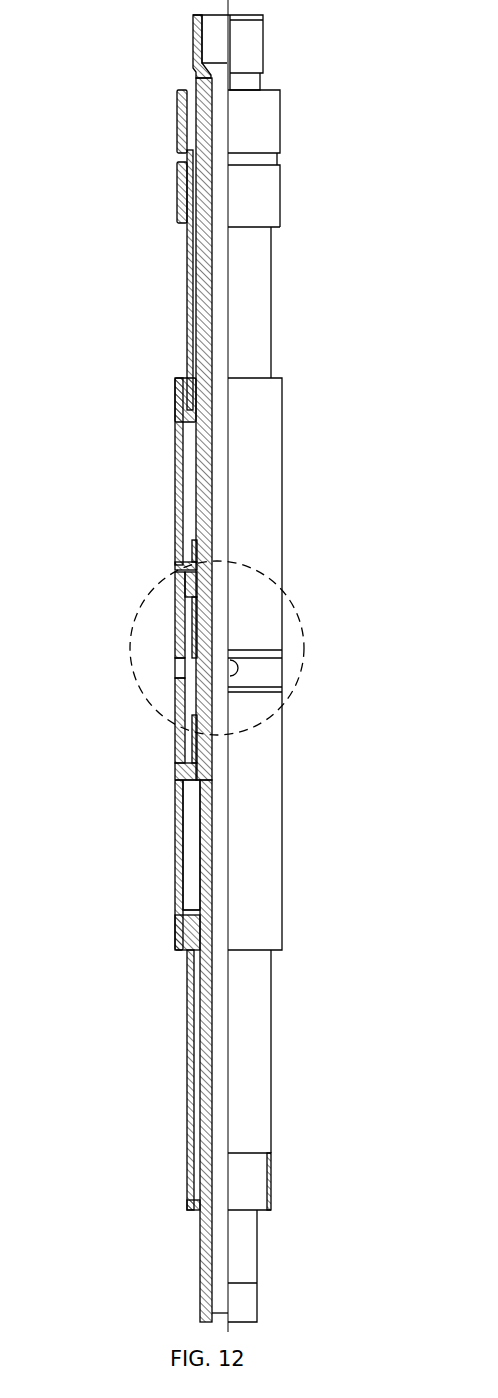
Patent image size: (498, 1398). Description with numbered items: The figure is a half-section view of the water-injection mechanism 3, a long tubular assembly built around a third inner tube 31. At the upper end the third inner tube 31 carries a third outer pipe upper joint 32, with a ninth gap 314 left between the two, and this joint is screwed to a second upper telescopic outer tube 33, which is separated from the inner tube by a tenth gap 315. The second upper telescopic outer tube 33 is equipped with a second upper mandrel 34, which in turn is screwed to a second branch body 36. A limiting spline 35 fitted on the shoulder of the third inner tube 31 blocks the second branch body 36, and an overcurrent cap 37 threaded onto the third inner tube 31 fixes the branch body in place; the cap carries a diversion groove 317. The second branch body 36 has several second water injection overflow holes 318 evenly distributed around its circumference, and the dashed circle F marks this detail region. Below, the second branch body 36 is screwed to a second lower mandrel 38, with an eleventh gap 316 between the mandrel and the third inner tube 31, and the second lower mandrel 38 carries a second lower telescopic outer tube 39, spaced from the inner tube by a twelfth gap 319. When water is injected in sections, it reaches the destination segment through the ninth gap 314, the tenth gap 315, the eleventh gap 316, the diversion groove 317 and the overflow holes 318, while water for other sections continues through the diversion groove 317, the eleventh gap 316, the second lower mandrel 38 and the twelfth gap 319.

The water-injection mechanism 3 is at (104, 24).
The third inner tube 31 is at (196, 66).
The third outer pipe upper joint 32 is at (182, 130).
The second upper telescopic outer tube 33 is at (192, 250).
The second upper mandrel 34 is at (180, 437).
The limiting spline 35 is at (180, 574).
The second branch body 36 is at (178, 662).
The overcurrent cap 37 is at (190, 773).
The second lower mandrel 38 is at (178, 882).
The second lower telescopic outer tube 39 is at (190, 997).
The ninth gap 314 is at (198, 122).
The tenth gap 315 is at (198, 279).
The eleventh gap 316 is at (192, 540).
The diversion groove 317 is at (192, 575).
The second water injection overflow holes 318 is at (182, 663).
The twelfth gap 319 is at (194, 1056).
The detail region F is at (311, 619).